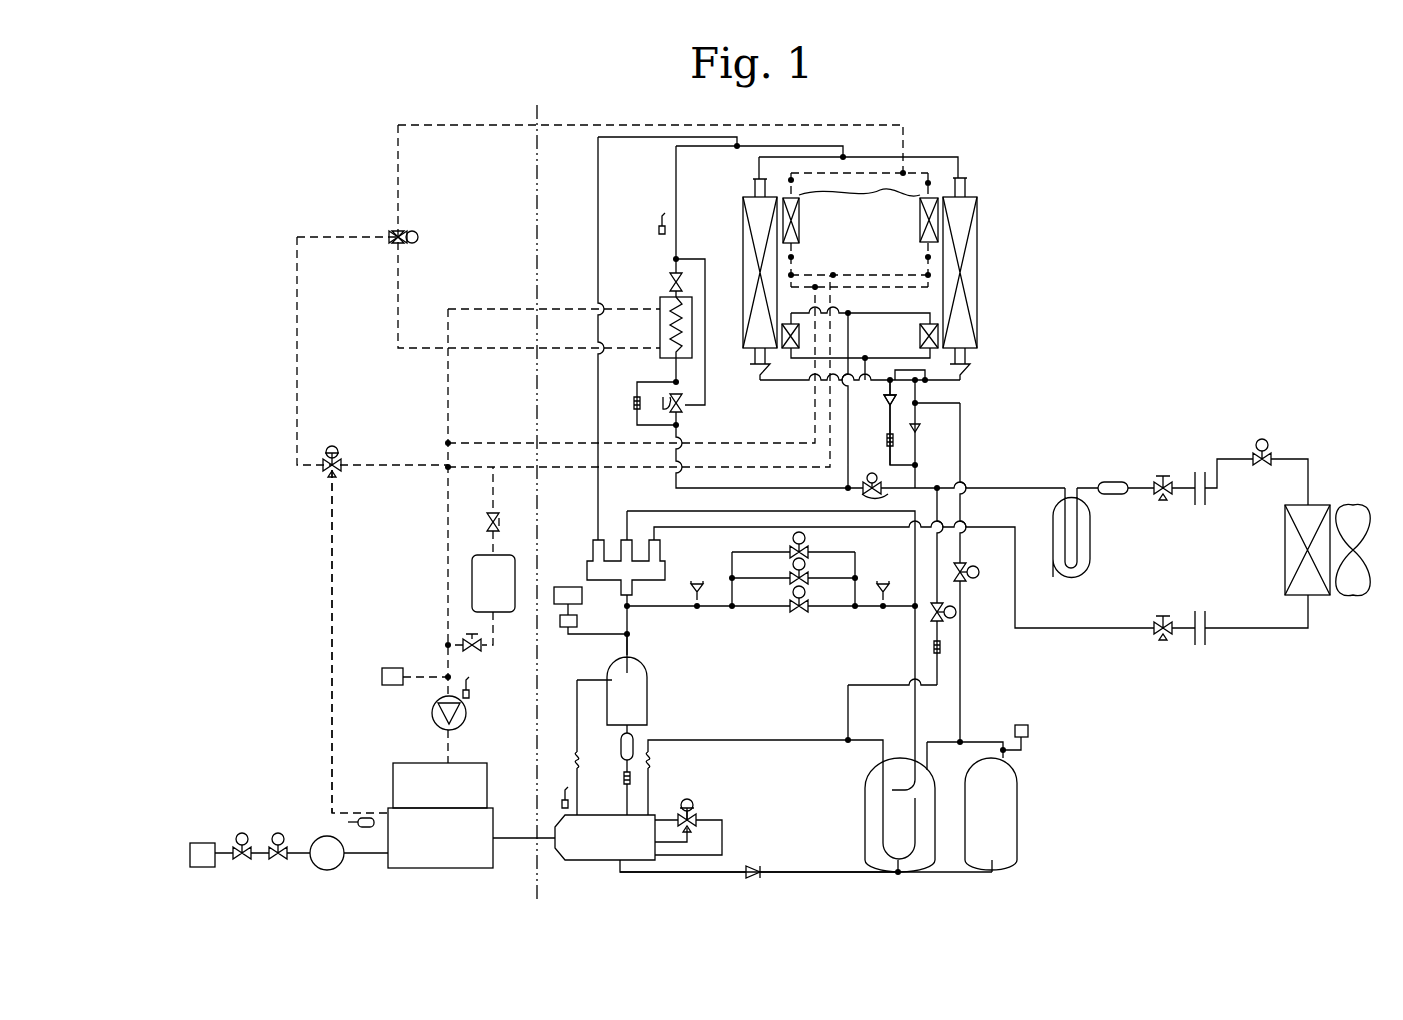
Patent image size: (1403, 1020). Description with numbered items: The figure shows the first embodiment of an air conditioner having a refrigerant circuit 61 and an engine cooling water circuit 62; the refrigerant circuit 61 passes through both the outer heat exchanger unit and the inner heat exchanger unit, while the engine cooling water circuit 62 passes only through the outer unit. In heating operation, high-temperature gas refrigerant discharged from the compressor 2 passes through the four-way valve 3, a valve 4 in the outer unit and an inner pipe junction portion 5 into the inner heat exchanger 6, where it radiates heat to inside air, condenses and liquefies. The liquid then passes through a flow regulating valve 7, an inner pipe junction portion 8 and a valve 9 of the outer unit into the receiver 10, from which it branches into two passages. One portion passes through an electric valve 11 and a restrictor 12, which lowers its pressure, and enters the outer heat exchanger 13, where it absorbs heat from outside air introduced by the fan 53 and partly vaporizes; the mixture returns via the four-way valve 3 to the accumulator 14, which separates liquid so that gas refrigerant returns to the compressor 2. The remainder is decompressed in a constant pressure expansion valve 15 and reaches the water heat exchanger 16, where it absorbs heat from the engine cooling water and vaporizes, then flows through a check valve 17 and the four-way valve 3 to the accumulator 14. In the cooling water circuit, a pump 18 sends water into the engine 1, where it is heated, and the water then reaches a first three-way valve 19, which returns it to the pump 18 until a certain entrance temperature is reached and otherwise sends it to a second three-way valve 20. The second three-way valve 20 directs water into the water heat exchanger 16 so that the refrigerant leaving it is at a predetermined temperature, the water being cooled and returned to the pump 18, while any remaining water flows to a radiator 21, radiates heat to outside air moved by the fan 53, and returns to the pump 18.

The engine 1 is at (405, 872).
The compressor 2 is at (600, 870).
The four-way valve 3 is at (585, 568).
The valve 4 is at (1150, 640).
The inner pipe junction portion 5 is at (1200, 648).
The inner heat exchanger 6 is at (1285, 535).
The flow regulating valve 7 is at (1275, 452).
The inner pipe junction portion 8 is at (1198, 470).
The valve 9 is at (1155, 480).
The receiver 10 is at (1090, 540).
The electric valve 11 is at (885, 496).
The restrictor 12 is at (893, 442).
The outer heat exchanger 13 is at (745, 230).
The accumulator 14 is at (866, 788).
The constant pressure expansion valve 15 is at (685, 420).
The water heat exchanger 16 is at (662, 298).
The check valve 17 is at (670, 280).
The pump 18 is at (432, 720).
The first three-way valve 19 is at (328, 475).
The second three-way valve 20 is at (390, 232).
The radiator 21 is at (800, 235).
The fan 53 is at (888, 198).
The refrigerant circuit 61 is at (800, 895).
The engine cooling water circuit 62 is at (262, 640).